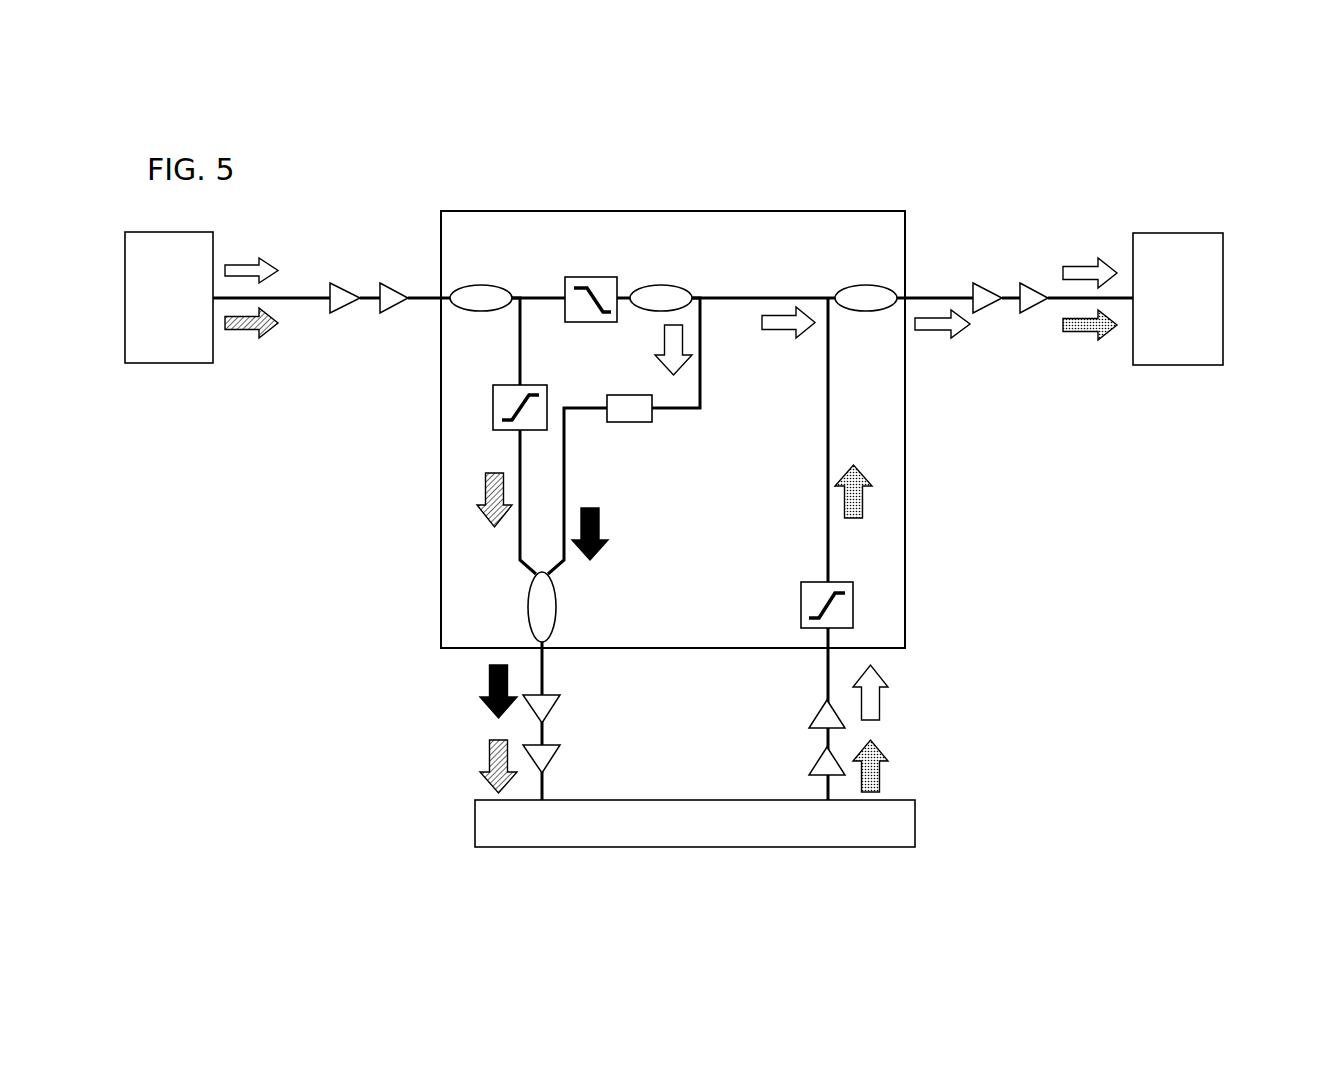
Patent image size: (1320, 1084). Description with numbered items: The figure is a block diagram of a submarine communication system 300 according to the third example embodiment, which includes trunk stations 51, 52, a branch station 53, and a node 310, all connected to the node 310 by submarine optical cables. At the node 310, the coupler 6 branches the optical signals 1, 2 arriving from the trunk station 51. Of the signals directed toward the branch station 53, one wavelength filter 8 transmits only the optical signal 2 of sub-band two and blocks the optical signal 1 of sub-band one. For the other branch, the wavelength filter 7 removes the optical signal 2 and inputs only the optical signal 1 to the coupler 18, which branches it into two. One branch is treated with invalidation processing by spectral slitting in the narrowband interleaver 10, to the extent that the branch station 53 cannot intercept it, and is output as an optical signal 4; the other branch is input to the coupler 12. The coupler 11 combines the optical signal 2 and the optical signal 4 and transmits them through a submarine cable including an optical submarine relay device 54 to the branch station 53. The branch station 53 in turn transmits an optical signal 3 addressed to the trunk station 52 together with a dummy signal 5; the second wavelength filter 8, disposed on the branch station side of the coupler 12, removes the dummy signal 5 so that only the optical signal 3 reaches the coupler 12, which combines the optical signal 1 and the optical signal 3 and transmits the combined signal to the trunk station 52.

The optical signal 1 is at (236, 262).
The optical signal 2 is at (240, 340).
The optical signal 3 is at (1086, 342).
The optical signal 4 is at (609, 522).
The dummy signal 5 is at (889, 706).
The coupler 6 is at (484, 285).
The wavelength filter 7 is at (578, 276).
The wavelength filter 8 is at (493, 406).
The narrowband interleaver 10 is at (614, 423).
The coupler 11 is at (557, 606).
The coupler 12 is at (863, 285).
The coupler 18 is at (678, 285).
The trunk station 51 is at (165, 364).
The trunk station 52 is at (1206, 366).
The branch station 53 is at (916, 806).
The optical submarine relay device 54 is at (812, 708).
The submarine communication system 300 is at (873, 181).
The node 310 is at (906, 450).